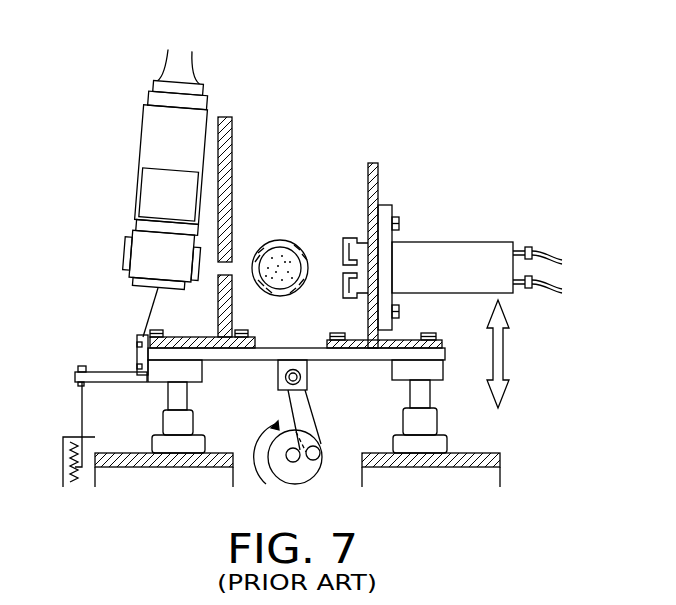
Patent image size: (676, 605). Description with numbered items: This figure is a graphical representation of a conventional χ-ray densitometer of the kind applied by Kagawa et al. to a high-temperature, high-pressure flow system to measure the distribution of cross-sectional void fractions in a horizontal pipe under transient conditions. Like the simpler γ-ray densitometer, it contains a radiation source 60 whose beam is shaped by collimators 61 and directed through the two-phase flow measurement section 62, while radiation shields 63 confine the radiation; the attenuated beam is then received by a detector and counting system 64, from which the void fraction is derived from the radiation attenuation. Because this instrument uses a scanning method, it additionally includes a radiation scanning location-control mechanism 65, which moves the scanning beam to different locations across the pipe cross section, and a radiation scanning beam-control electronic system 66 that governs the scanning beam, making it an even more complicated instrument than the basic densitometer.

The radiation source 60 is at (128, 265).
The collimators 61 is at (233, 258).
The two-phase flow measurement section 62 is at (287, 240).
The radiation shields 63 is at (232, 140).
The detector and counting system 64 is at (453, 241).
The radiation scanning location-control mechanism 65 is at (504, 455).
The radiation scanning beam-control electronic system 66 is at (70, 438).